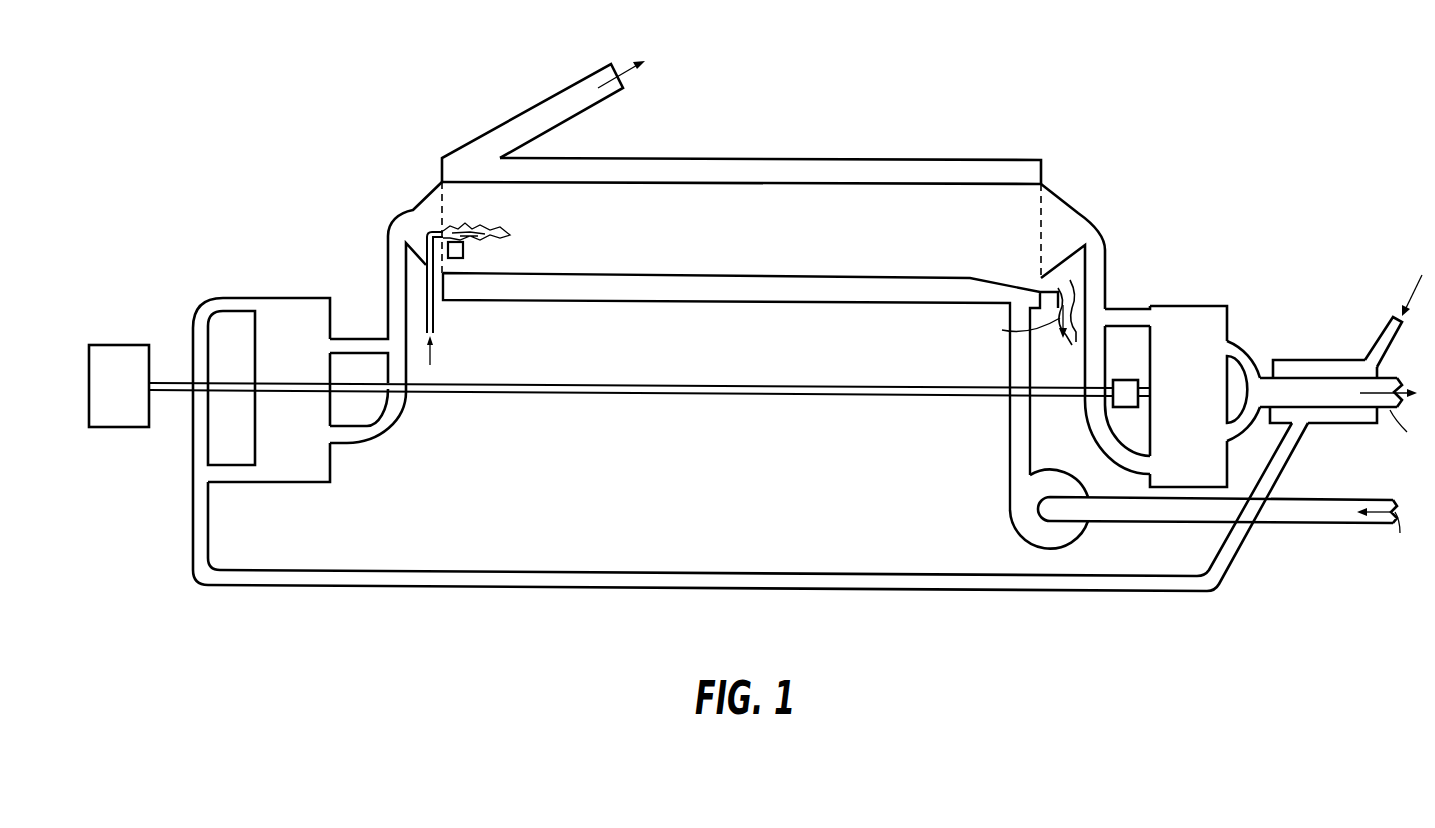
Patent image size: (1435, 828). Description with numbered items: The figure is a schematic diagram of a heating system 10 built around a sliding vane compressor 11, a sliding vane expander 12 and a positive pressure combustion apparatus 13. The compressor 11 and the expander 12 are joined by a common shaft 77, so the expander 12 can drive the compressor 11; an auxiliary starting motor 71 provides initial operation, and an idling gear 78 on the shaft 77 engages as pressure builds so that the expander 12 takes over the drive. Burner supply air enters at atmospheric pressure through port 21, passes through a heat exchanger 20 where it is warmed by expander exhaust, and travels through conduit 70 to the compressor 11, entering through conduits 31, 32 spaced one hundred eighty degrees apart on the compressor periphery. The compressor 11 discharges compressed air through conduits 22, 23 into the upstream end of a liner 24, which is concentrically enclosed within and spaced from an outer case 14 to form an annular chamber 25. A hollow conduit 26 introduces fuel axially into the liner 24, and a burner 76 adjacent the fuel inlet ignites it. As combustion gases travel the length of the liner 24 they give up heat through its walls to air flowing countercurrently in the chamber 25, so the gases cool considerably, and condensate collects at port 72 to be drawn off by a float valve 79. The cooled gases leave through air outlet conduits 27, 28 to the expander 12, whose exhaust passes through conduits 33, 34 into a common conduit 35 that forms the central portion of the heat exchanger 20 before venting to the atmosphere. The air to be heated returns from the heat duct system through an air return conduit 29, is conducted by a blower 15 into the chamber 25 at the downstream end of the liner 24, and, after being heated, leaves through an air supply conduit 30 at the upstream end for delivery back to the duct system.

The heating system 10 is at (947, 80).
The sliding vane compressor 11 is at (282, 289).
The sliding vane expander 12 is at (1195, 301).
The positive pressure combustion apparatus 13 is at (773, 156).
The outer case 14 is at (625, 158).
The blower 15 is at (1022, 510).
The heat exchanger 20 is at (1343, 365).
The port 21 is at (1390, 330).
The compressed air conduit 22 is at (348, 342).
The compressed air conduit 23 is at (365, 428).
The liner 24 is at (885, 170).
The annular chamber 25 is at (975, 170).
The hollow conduit 26 is at (433, 307).
The air outlet conduit 27 is at (1118, 312).
The air outlet conduit 28 is at (1100, 436).
The air return conduit 29 is at (1160, 512).
The air supply conduit 30 is at (537, 113).
The conduit 31 is at (215, 310).
The conduit 32 is at (223, 474).
The conduit 33 is at (1237, 347).
The conduit 34 is at (1237, 437).
The common conduit 35 is at (1320, 385).
The conduit 70 is at (893, 592).
The auxiliary starting motor 71 is at (122, 352).
The port 72 is at (1050, 291).
The burner 76 is at (463, 250).
The common shaft 77 is at (805, 393).
The idling gear 78 is at (1125, 380).
The float valve 79 is at (984, 336).